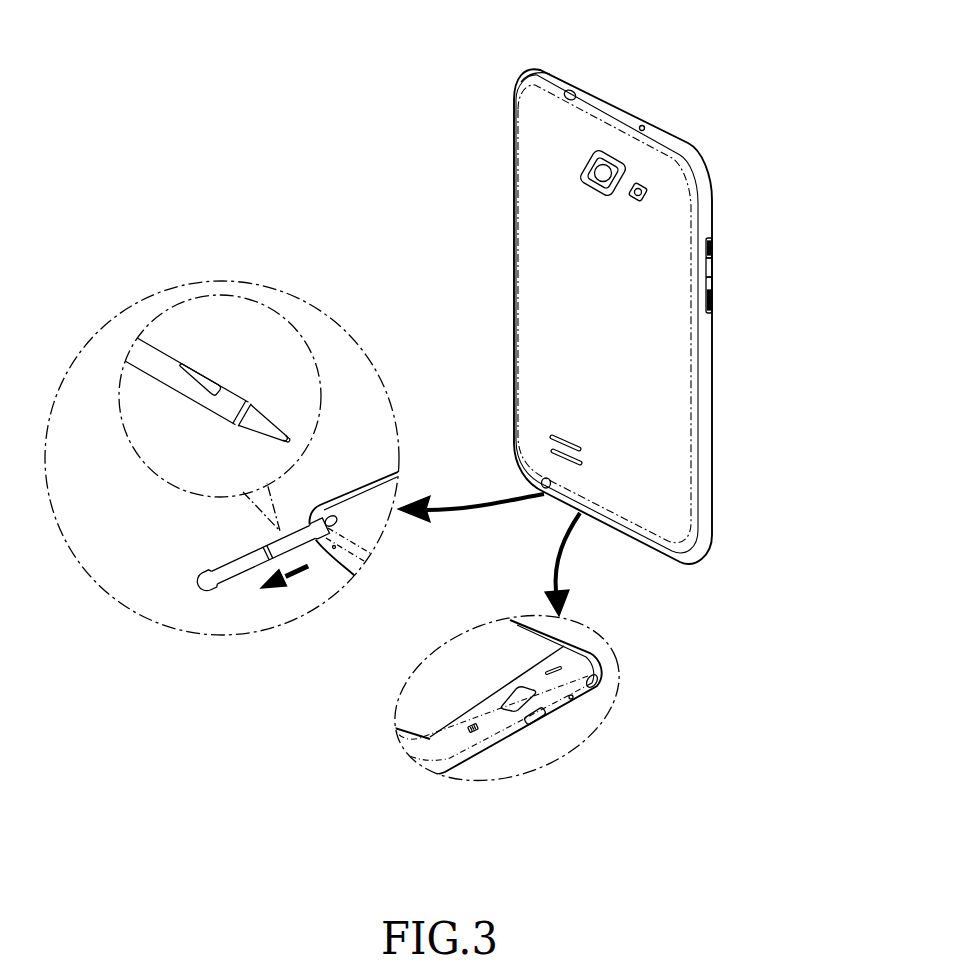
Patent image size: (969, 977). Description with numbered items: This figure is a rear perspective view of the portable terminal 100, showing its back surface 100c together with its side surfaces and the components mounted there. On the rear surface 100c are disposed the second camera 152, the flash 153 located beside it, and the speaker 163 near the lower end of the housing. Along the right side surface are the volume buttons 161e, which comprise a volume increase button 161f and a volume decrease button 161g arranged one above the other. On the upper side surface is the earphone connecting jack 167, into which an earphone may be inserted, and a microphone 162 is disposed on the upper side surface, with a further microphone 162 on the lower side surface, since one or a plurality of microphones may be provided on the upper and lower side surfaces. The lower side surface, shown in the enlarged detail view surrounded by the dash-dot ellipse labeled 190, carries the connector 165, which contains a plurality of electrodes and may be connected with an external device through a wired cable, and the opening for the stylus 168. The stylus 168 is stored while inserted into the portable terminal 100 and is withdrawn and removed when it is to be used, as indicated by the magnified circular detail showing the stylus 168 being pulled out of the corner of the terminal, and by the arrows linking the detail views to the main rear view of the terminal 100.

The portable terminal 100 is at (514, 50).
The back surface 100c is at (533, 305).
The second camera 152 is at (586, 161).
The flash 153 is at (647, 193).
The volume buttons 161e is at (722, 236).
The volume increase button 161f is at (712, 264).
The volume decrease button 161g is at (713, 288).
The microphone 162 is at (643, 126).
The speaker 163 is at (552, 437).
The connector 165 is at (535, 722).
The earphone connecting jack 167 is at (571, 91).
The stylus 168 is at (544, 480).
The stylus pen accommodating portion 190 is at (440, 671).